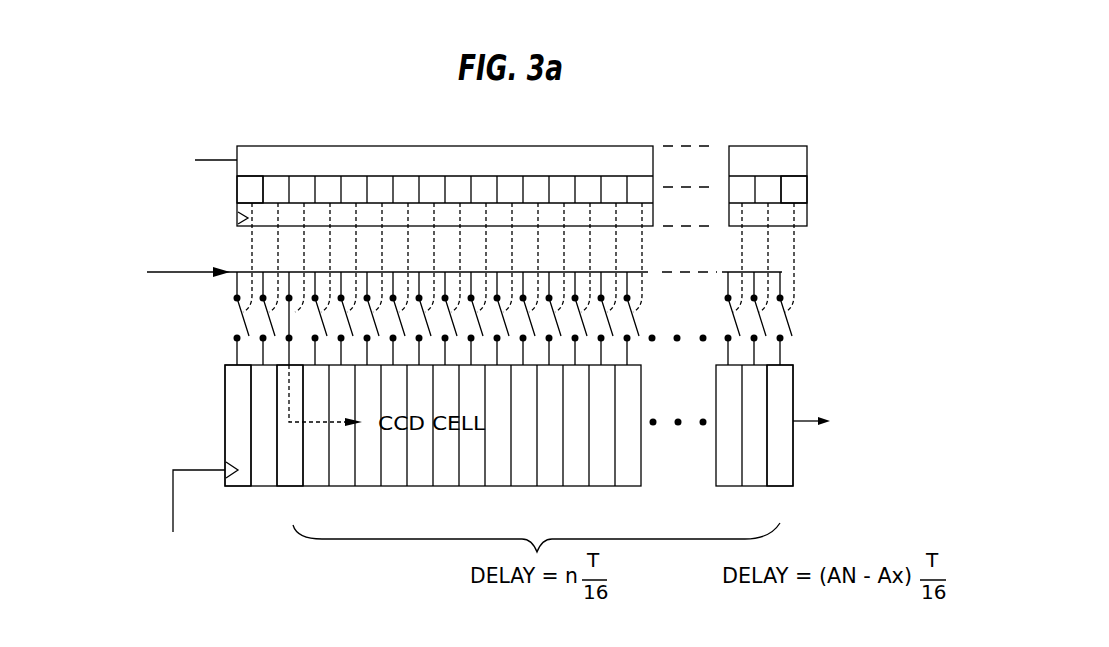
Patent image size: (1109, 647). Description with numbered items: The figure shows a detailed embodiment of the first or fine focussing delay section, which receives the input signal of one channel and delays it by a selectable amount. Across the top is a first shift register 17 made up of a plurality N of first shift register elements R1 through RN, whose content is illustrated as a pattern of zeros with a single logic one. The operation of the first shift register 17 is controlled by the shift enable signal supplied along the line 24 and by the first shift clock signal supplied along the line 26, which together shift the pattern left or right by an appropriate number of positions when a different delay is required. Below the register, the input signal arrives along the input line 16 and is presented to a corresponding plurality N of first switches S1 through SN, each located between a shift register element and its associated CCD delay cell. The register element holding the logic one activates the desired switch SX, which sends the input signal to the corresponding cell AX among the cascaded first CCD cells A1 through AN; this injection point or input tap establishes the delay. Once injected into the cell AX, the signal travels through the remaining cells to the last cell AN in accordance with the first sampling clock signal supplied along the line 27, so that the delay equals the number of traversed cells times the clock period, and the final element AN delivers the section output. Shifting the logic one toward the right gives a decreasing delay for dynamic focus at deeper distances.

The first shift register 17 is at (465, 143).
The line 24 is at (211, 157).
The line 26 is at (238, 218).
The input line 16 is at (157, 276).
The line 27 is at (172, 507).
The first shift register element R1 is at (251, 174).
The first shift register element RN is at (810, 188).
The first switch S1 is at (240, 320).
The first switch SX is at (298, 329).
The first switch SN is at (791, 319).
The first CCD cell A1 is at (240, 441).
The first CCD cell AX is at (296, 489).
The first CCD cell AN is at (777, 488).